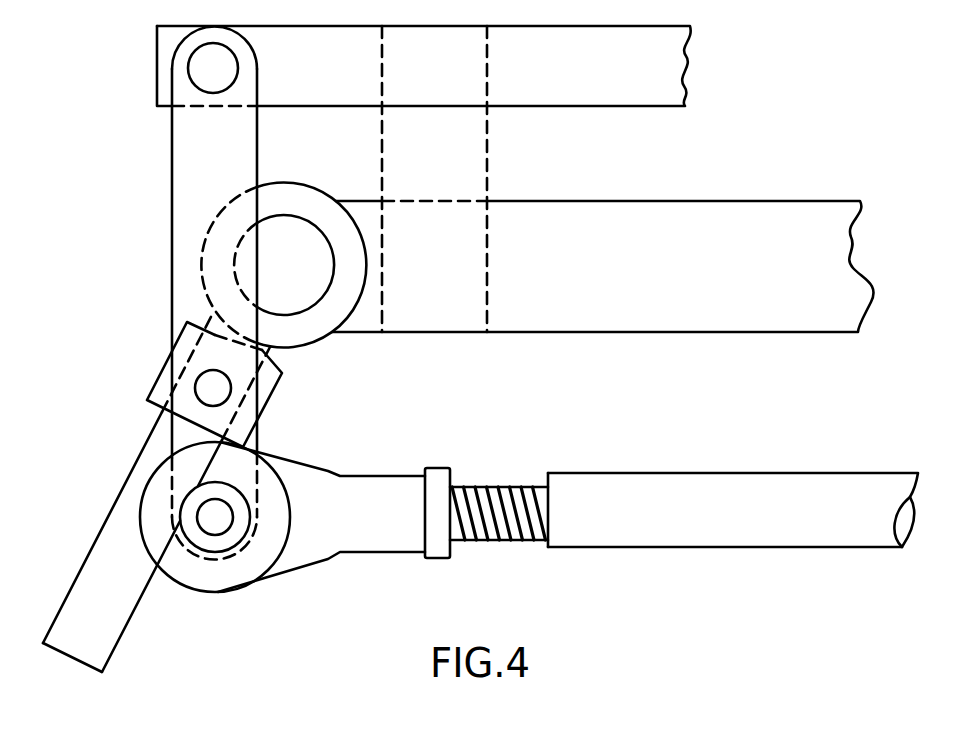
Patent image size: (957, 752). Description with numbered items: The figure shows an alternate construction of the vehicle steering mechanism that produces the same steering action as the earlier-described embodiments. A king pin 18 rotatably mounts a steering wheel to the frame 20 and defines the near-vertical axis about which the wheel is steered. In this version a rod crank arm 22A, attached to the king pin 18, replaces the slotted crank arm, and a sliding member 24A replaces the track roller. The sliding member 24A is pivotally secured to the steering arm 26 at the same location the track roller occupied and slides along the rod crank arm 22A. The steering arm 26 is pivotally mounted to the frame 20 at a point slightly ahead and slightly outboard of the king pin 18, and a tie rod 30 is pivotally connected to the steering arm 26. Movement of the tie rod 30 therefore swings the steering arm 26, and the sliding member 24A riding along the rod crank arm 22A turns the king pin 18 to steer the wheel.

The king pin 18 is at (266, 274).
The frame 20 is at (552, 106).
The rod crank arm 22A is at (112, 510).
The sliding member 24A is at (272, 387).
The steering arm 26 is at (172, 184).
The tie rod 30 is at (692, 473).